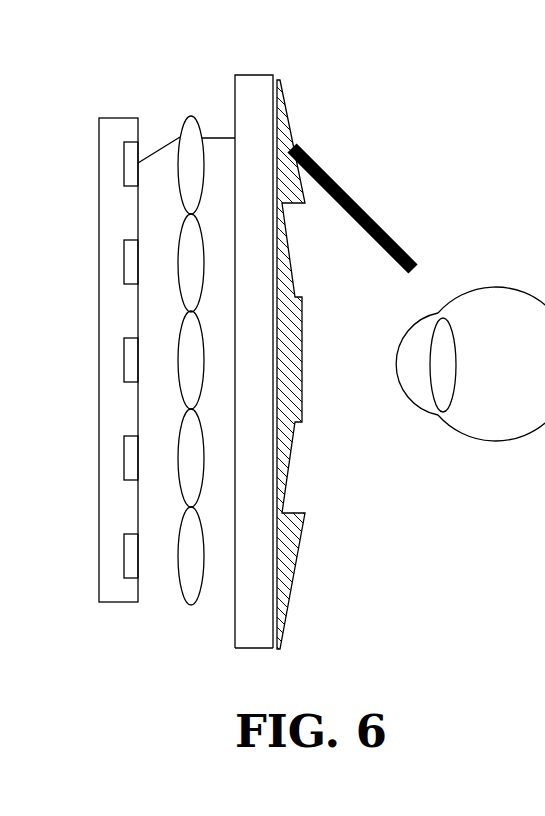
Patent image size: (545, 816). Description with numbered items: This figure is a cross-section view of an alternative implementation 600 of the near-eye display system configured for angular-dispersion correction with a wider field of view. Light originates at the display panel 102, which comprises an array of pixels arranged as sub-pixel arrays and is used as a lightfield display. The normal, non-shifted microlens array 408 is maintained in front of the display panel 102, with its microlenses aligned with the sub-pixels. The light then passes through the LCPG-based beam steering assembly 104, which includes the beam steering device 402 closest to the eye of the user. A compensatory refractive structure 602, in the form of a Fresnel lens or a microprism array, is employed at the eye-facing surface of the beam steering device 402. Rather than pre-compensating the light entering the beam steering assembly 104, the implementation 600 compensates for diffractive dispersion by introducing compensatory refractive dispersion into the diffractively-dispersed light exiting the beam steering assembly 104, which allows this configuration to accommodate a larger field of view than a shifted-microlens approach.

The implementation 600 is at (359, 62).
The display panel 102 is at (115, 603).
The microlens array 408 is at (184, 104).
The beam steering assembly 104 is at (247, 66).
The beam steering device 402 is at (258, 650).
The compensatory refractive structure 602 is at (303, 362).